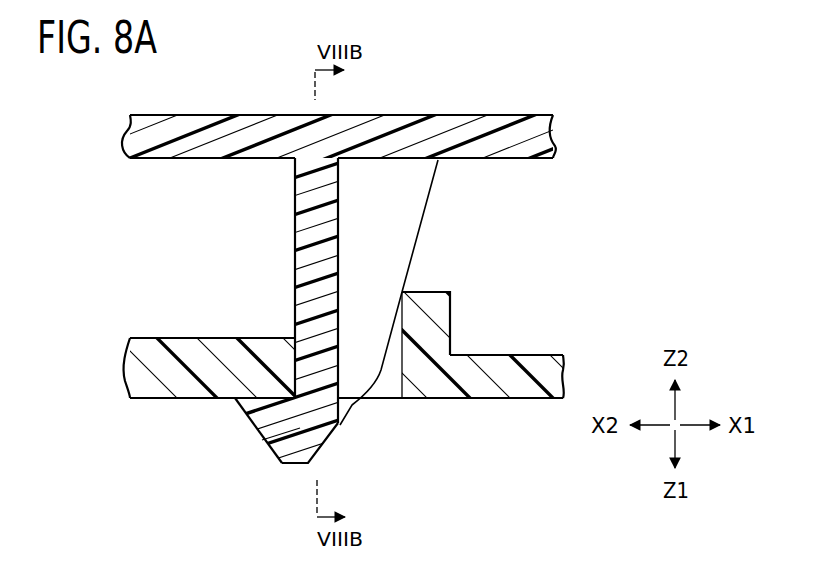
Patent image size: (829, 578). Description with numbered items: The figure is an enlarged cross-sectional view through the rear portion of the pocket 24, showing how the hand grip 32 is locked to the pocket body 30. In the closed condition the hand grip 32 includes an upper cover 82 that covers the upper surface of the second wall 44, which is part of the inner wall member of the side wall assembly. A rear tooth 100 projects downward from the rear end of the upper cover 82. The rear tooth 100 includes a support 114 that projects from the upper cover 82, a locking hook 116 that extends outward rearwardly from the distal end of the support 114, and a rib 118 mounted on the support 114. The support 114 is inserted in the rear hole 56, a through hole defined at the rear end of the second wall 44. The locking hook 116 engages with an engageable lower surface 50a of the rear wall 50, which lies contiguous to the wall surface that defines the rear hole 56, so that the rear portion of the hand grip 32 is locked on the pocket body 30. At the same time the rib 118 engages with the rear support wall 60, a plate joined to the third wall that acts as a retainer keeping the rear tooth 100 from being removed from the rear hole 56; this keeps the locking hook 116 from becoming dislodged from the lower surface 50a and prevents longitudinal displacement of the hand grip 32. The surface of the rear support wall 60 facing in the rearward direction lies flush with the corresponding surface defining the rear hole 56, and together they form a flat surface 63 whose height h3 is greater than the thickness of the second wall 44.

The pocket 24 is at (509, 43).
The hand grip 32 is at (542, 102).
The upper cover 82 is at (560, 119).
The support 114 is at (302, 223).
The rib 118 is at (405, 200).
The flat surface 63 is at (397, 311).
The height h3 is at (353, 299).
The rear wall 50 is at (218, 347).
The engageable lower surface 50a is at (244, 420).
The locking hook 116 is at (268, 430).
The rear tooth 100 is at (282, 465).
The rear hole 56 is at (387, 390).
The pocket body 30 is at (574, 328).
The rear support wall 60 is at (445, 305).
The second wall 44 is at (552, 368).